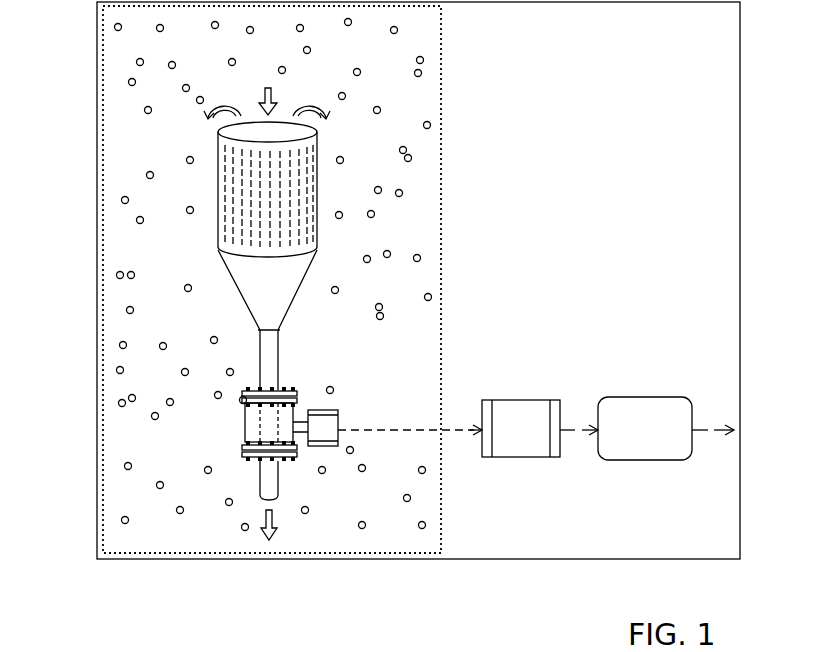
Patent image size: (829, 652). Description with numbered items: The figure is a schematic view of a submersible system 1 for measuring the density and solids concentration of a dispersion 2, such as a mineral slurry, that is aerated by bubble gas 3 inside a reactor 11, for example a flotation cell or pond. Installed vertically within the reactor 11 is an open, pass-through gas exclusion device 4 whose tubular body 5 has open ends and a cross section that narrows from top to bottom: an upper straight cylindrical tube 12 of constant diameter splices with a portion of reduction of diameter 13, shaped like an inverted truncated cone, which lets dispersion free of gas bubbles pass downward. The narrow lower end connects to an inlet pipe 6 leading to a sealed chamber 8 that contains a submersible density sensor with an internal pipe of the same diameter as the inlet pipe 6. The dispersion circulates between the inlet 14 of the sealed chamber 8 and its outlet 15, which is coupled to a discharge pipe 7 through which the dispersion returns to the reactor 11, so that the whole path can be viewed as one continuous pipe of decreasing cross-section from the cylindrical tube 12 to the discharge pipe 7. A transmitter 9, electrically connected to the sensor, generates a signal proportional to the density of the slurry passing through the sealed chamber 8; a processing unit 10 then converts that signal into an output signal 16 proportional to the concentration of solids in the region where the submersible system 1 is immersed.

The submersible system 1 is at (580, 213).
The dispersion 2 is at (395, 522).
The bubble gas 3 is at (411, 501).
The gas exclusion device 4 is at (366, 237).
The tubular body 5 is at (210, 267).
The inlet pipe 6 is at (272, 356).
The discharge pipe 7 is at (271, 482).
The sealed chamber 8 is at (245, 430).
The transmitter 9 is at (512, 421).
The processing unit 10 is at (636, 421).
The reactor 11 is at (312, 548).
The straight cylindrical tube 12 is at (238, 153).
The portion of reduction of diameter 13 is at (270, 290).
The inlet of the sealed chamber 14 is at (251, 377).
The outlet of the sealed chamber 15 is at (298, 463).
The output signal 16 is at (719, 445).